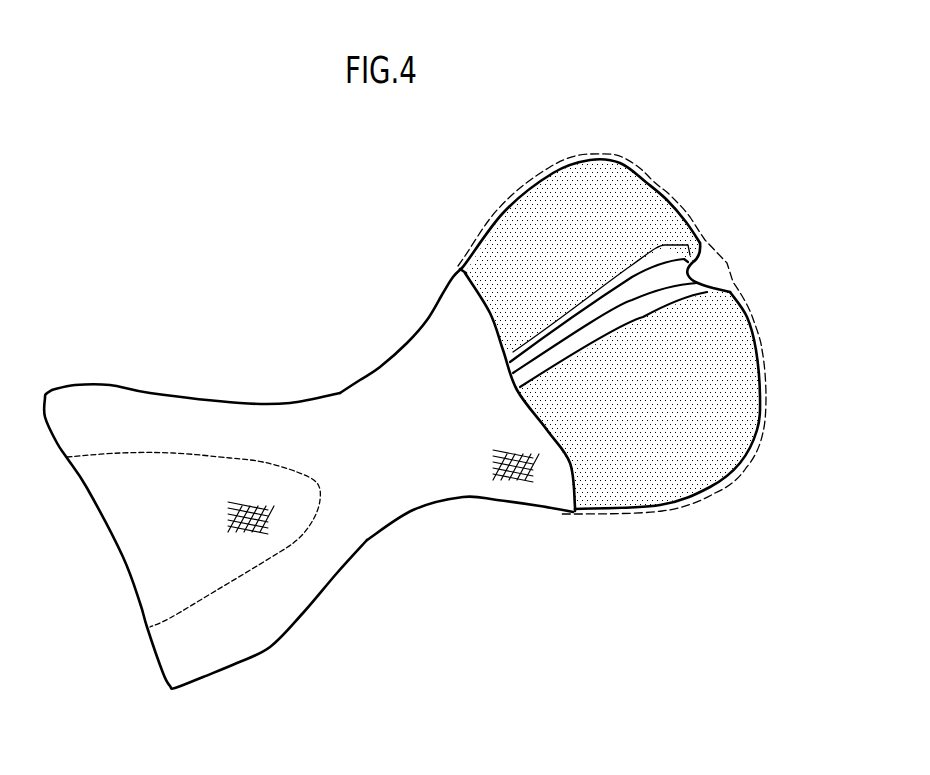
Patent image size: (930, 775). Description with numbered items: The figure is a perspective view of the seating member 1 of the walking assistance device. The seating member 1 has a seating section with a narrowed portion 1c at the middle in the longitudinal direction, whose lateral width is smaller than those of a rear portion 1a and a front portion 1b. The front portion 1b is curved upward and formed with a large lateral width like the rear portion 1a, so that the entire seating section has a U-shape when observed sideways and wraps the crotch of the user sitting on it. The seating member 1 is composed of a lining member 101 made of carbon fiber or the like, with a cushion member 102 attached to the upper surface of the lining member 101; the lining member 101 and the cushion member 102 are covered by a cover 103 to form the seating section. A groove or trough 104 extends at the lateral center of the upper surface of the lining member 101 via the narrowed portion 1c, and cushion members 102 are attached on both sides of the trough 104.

The seating member 1 is at (328, 352).
The rear portion 1a is at (693, 507).
The front portion 1b is at (252, 662).
The narrowed portion 1c is at (413, 513).
The lining member 101 is at (672, 250).
The cushion member 102 is at (590, 173).
The cover 103 is at (520, 493).
The trough 104 is at (692, 281).